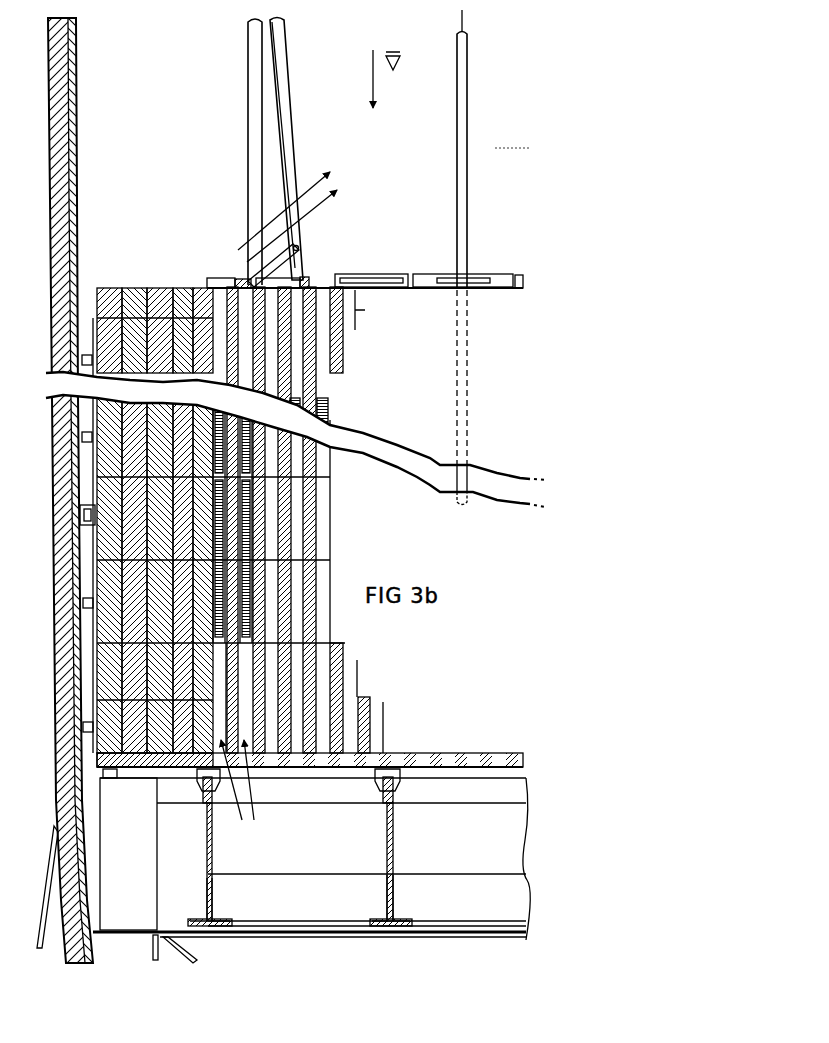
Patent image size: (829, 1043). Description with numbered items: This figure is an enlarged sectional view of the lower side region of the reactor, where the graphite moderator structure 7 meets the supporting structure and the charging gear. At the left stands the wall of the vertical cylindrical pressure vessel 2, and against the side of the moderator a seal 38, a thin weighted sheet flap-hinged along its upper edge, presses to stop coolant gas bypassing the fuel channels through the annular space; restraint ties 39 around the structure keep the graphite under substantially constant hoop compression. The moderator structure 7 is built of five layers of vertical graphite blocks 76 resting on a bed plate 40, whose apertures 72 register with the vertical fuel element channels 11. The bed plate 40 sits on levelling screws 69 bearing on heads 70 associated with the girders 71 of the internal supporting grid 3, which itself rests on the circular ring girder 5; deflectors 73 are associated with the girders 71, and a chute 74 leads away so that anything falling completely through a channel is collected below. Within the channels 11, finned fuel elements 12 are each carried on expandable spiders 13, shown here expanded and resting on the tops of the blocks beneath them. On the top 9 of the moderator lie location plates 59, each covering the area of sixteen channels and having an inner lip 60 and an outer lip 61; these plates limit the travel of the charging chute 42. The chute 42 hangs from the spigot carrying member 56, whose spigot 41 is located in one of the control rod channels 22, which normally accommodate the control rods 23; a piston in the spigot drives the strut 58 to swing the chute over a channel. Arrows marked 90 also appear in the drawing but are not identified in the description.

The pressure vessel 2 is at (79, 199).
The internal supporting grid 3 is at (307, 927).
The ring girder 5 is at (100, 857).
The graphite moderator structure 7 is at (433, 538).
The top of the moderator structure 9 is at (158, 287).
The fuel element channels 11 is at (298, 589).
The fuel elements 12 is at (330, 412).
The expandable spiders 13 is at (235, 698).
The control rod channels 22 is at (456, 419).
The control rods 23 is at (456, 152).
The seal 38 is at (92, 518).
The restraint ties 39 is at (90, 358).
The bed plate 40 is at (155, 747).
The spigot 41 is at (219, 290).
The charging chute 42 is at (291, 156).
The spigot carrying member 56 is at (252, 168).
The strut 58 is at (256, 260).
The location plates 59 is at (428, 277).
The inner lip 60 is at (336, 280).
The outer lip 61 is at (307, 280).
The levelling screws 69 is at (116, 781).
The heads 70 is at (400, 780).
The girders 71 is at (387, 853).
The apertures 72 is at (263, 766).
The deflectors 73 is at (420, 874).
The chute 74 is at (190, 950).
The graphite blocks 76 is at (93, 605).
The direction arrows 90 is at (294, 507).